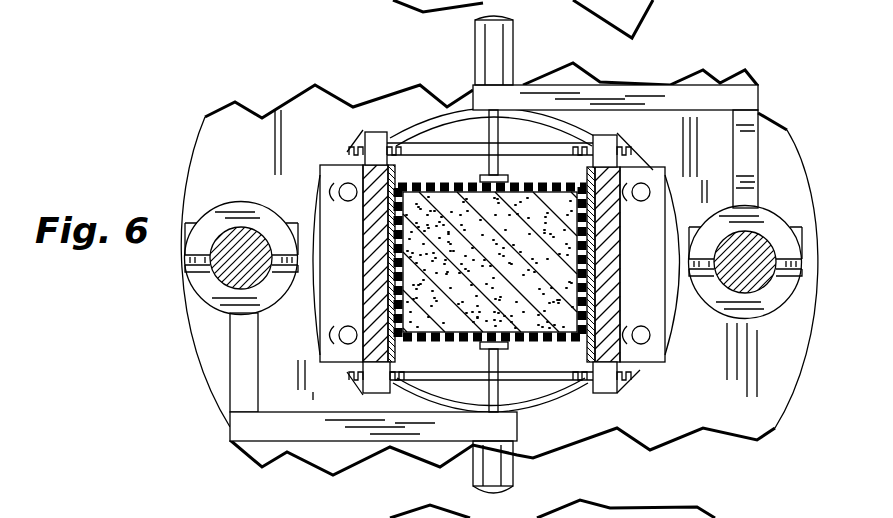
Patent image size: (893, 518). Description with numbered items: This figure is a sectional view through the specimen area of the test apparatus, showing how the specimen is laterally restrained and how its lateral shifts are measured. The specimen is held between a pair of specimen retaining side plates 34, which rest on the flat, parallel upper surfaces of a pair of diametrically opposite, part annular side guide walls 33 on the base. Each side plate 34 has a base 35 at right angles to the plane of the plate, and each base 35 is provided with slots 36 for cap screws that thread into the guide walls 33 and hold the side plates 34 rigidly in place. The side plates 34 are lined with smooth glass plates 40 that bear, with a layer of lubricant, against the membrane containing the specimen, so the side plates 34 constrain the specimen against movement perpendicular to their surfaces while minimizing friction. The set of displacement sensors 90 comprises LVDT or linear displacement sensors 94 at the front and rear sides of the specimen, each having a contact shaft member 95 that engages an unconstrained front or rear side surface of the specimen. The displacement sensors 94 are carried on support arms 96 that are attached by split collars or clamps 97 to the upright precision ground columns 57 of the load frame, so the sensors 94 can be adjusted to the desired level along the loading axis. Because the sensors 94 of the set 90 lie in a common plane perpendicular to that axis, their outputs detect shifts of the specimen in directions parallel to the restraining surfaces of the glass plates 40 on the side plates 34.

The set of displacement sensors 90 is at (458, 78).
The displacement sensor 94 is at (512, 42).
The contact shaft member 95 is at (498, 132).
The support arm 96 is at (710, 93).
The split collar 97 is at (770, 215).
The column 57 is at (243, 232).
The side guide wall 33 is at (345, 162).
The side plate 34 is at (615, 282).
The base 35 is at (320, 172).
The slot 36 is at (665, 177).
The glass plate 40 is at (402, 176).